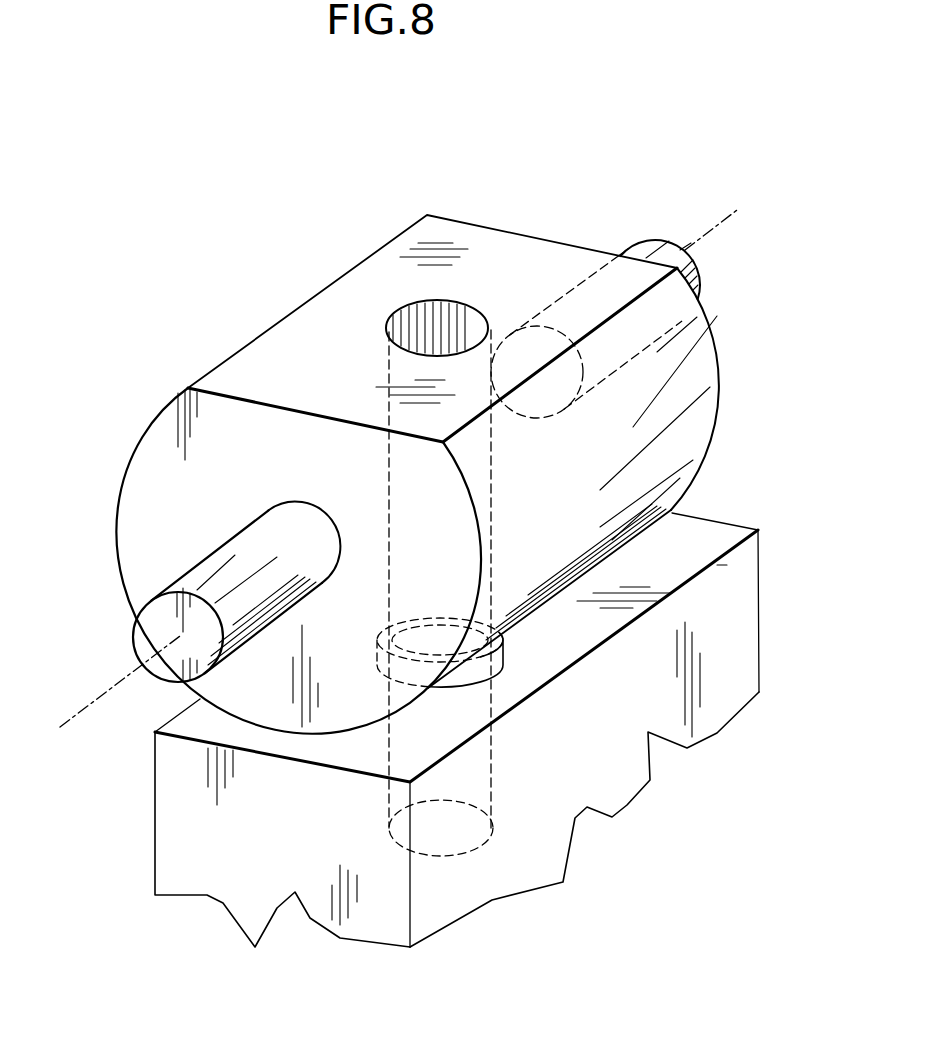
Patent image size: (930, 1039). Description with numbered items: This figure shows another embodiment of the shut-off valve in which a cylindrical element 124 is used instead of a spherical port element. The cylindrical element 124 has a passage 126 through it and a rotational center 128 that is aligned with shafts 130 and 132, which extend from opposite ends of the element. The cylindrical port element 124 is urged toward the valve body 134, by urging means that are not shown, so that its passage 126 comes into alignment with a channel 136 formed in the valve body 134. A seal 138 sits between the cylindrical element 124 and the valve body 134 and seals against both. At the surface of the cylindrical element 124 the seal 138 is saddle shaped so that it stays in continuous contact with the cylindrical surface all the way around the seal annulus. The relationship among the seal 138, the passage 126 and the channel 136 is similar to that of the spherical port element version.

The cylindrical element 124 is at (385, 240).
The passage 126 is at (402, 307).
The rotational center 128 is at (122, 677).
The shaft 130 is at (227, 540).
The shaft 132 is at (642, 237).
The valve body 134 is at (720, 515).
The channel 136 is at (492, 832).
The seal 138 is at (493, 667).